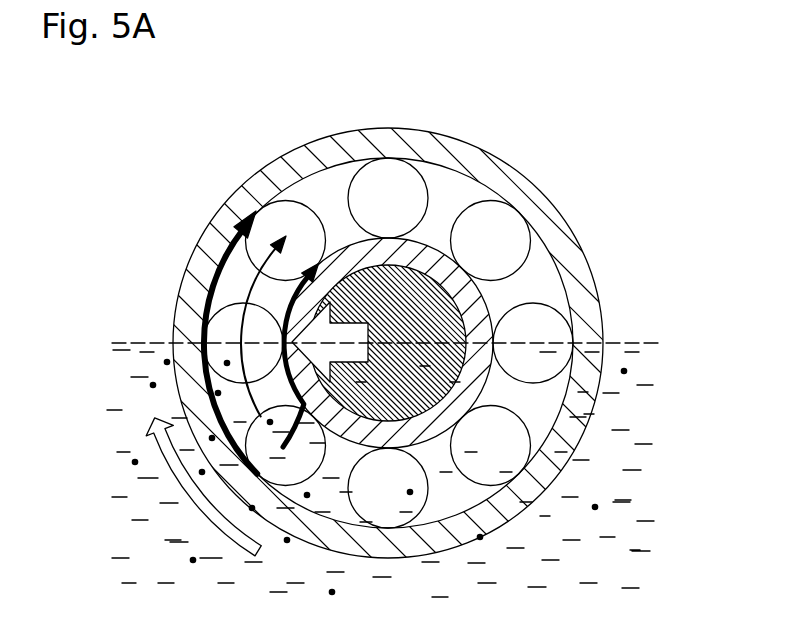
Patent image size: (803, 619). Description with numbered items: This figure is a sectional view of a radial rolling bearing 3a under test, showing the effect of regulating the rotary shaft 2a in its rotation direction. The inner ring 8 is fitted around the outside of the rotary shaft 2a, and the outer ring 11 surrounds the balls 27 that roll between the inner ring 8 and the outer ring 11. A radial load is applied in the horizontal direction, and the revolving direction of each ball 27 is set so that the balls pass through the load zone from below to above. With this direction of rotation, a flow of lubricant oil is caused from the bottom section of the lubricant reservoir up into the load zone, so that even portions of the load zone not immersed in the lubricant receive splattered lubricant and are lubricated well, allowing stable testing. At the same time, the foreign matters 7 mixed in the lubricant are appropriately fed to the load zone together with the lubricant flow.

The radial rolling bearing 3a is at (450, 320).
The outer ring 11 is at (602, 312).
The rotary shaft 2a is at (580, 440).
The ball 27 is at (383, 184).
The inner ring 8 is at (430, 258).
The foreign matter 7 is at (227, 363).